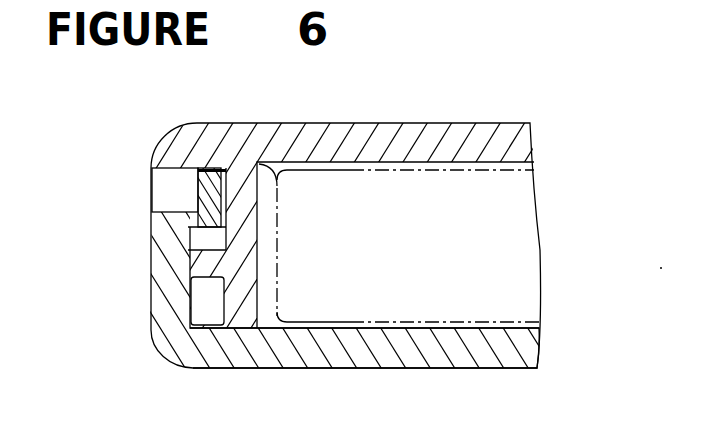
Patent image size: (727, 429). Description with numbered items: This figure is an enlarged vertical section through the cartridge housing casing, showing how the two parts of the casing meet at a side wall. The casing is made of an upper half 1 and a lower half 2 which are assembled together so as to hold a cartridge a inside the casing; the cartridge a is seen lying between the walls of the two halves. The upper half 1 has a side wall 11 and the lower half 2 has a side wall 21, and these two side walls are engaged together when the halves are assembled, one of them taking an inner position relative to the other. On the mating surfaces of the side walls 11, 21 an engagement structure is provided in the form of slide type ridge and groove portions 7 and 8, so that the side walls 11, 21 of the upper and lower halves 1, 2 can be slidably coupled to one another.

The upper half 1 is at (445, 124).
The lower half 2 is at (328, 368).
The slide type ridge and groove portion 7 is at (200, 240).
The slide type ridge and groove portion 8 is at (241, 234).
The side wall of the upper half 11 is at (230, 298).
The side wall of the lower half 21 is at (164, 273).
The cartridge a is at (260, 162).